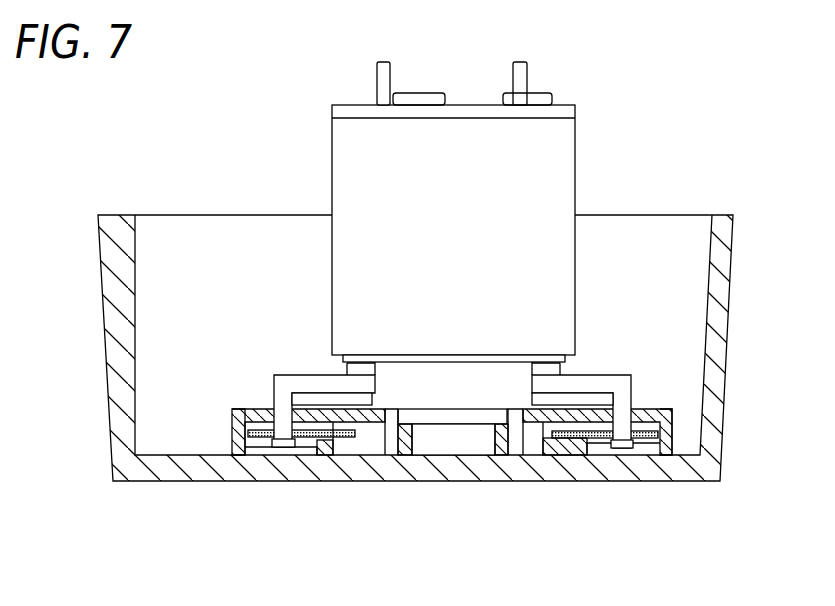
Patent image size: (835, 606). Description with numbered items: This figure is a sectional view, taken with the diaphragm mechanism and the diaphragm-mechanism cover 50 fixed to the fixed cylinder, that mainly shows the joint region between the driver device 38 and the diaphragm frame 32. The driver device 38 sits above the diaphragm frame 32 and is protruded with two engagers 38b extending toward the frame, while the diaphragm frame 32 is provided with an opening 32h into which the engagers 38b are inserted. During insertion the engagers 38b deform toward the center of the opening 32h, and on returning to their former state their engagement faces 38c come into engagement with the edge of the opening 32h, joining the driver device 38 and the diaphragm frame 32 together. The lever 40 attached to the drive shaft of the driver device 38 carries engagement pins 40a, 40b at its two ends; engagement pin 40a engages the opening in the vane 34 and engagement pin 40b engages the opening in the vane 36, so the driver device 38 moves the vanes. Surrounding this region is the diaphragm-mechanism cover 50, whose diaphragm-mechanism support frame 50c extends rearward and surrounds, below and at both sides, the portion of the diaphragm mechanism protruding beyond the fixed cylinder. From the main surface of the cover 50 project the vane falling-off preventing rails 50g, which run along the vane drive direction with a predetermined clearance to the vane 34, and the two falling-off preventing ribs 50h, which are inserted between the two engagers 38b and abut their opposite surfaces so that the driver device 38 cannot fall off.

The diaphragm frame 32 is at (232, 408).
The opening 32h is at (458, 447).
The vane 34 is at (670, 455).
The vane 36 is at (242, 448).
The driver device 38 is at (558, 159).
The engagers 38b is at (375, 442).
The engagement faces 38c is at (330, 447).
The lever 40 is at (290, 378).
The engagement pin 40a is at (643, 453).
The engagement pin 40b is at (270, 447).
The diaphragm-mechanism cover 50 is at (172, 462).
The diaphragm-mechanism support frame 50c is at (718, 350).
The vane falling-off preventing rails 50g is at (338, 452).
The falling-off preventing ribs 50h is at (403, 447).